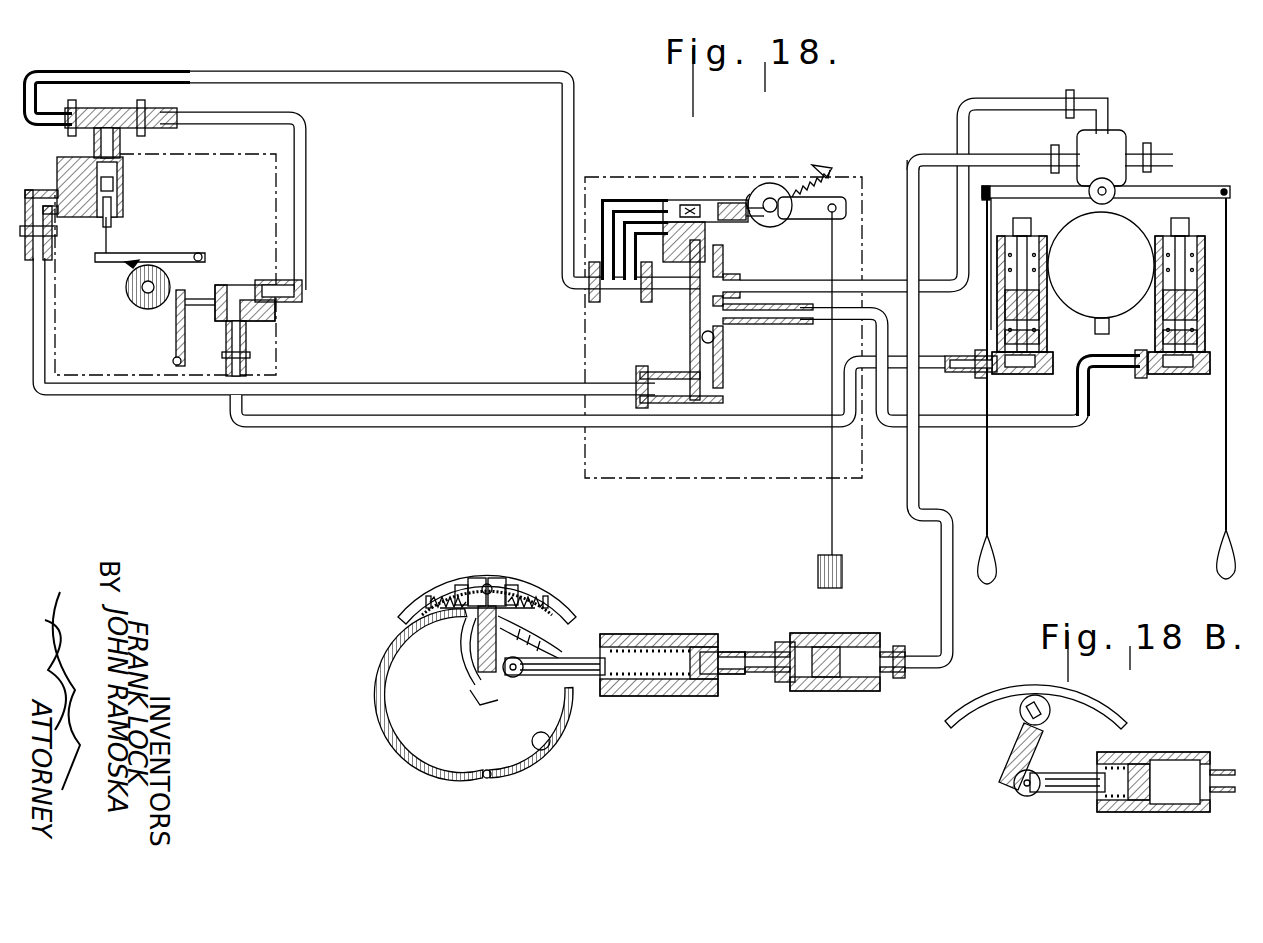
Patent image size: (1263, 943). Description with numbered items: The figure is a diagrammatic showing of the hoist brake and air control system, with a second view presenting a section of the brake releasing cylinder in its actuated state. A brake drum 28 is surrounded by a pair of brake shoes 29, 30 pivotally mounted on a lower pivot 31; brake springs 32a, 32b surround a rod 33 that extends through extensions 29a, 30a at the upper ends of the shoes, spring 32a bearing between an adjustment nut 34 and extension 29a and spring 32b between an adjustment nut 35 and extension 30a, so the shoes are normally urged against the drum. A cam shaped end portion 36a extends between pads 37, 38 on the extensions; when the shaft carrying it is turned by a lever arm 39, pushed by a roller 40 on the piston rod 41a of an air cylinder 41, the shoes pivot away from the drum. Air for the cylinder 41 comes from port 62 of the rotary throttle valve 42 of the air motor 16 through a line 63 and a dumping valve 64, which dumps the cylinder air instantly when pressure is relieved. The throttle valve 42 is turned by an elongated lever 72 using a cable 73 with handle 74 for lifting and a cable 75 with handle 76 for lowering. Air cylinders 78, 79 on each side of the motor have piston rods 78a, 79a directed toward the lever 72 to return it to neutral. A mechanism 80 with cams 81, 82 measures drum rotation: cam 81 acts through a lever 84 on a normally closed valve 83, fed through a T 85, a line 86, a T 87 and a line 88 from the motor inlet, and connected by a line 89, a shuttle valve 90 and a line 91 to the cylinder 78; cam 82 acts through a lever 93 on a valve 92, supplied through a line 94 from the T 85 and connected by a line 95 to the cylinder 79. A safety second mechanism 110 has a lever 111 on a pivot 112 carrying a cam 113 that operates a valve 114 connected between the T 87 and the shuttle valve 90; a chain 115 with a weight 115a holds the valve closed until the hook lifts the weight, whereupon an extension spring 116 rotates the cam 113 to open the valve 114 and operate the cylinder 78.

In FIG. 18, the air motor 16 is at (1130, 243).
In FIG. 18, the brake drum 28 is at (544, 750).
In FIG. 18, the brake shoe 29 is at (408, 742).
In FIG. 18, the extension 29a is at (470, 584).
In FIG. 18, the brake shoe 30 is at (566, 736).
In FIG. 18, the extension 30a is at (500, 584).
In FIG. 18, the lower pivot 31 is at (487, 778).
In FIG. 18, the brake spring 32a is at (440, 598).
In FIG. 18, the brake spring 32b is at (530, 600).
In FIG. 18, the rod 33 is at (462, 586).
In FIG. 18, the adjustment nut 34 is at (412, 596).
In FIG. 18, the adjustment nut 35 is at (541, 602).
In FIG. 18, the cam shaped end portion 36a is at (466, 642).
In FIG. 18B, the cam shaped end portion 36a is at (1034, 697).
In FIG. 18, the pad 37 is at (488, 584).
In FIG. 18, the pad 38 is at (510, 586).
In FIG. 18, the lever arm 39 is at (514, 648).
In FIG. 18B, the lever arm 39 is at (1003, 753).
In FIG. 18, the roller 40 is at (497, 704).
In FIG. 18B, the roller 40 is at (1020, 795).
In FIG. 18, the air cylinder 41 is at (674, 634).
In FIG. 18B, the air cylinder 41 is at (1188, 743).
In FIG. 18, the piston rod 41a is at (590, 657).
In FIG. 18B, the piston rod 41a is at (1068, 792).
In FIG. 18, the rotary throttle valve 42 is at (1130, 142).
In FIG. 18, the port 62 is at (1060, 152).
In FIG. 18, the line 63 is at (921, 328).
In FIG. 18, the dumping valve 64 is at (830, 692).
In FIG. 18, the elongated lever 72 is at (1184, 186).
In FIG. 18, the cable 73 is at (1224, 462).
In FIG. 18, the handle 74 is at (1222, 546).
In FIG. 18, the cable 75 is at (993, 484).
In FIG. 18, the handle 76 is at (997, 566).
In FIG. 18, the air cylinder 78 is at (1156, 332).
In FIG. 18, the piston rod 78a is at (1158, 264).
In FIG. 18, the air cylinder 79 is at (1046, 332).
In FIG. 18, the piston rod 79a is at (1053, 264).
In FIG. 18, the mechanism 80 is at (281, 209).
In FIG. 18, the cam 81 is at (128, 272).
In FIG. 18, the cam 82 is at (180, 283).
In FIG. 18, the valve 83 is at (124, 200).
In FIG. 18, the lever 84 is at (135, 256).
In FIG. 18, the T 85 is at (112, 108).
In FIG. 18, the line 86 is at (197, 78).
In FIG. 18, the T 87 is at (618, 302).
In FIG. 18, the line 88 is at (788, 282).
In FIG. 18, the line 89 is at (172, 397).
In FIG. 18, the shuttle valve 90 is at (724, 342).
In FIG. 18, the line 91 is at (822, 325).
In FIG. 18, the valve 92 is at (276, 341).
In FIG. 18, the lever 93 is at (174, 334).
In FIG. 18, the line 94 is at (308, 226).
In FIG. 18, the line 95 is at (377, 428).
In FIG. 18, the second mechanism 110 is at (762, 142).
In FIG. 18, the lever 111 is at (803, 192).
In FIG. 18, the pivot 112 is at (772, 200).
In FIG. 18, the cam 113 is at (756, 200).
In FIG. 18, the valve 114 is at (682, 210).
In FIG. 18, the chain 115 is at (834, 250).
In FIG. 18, the weight 115a is at (816, 570).
In FIG. 18, the extension spring 116 is at (824, 175).